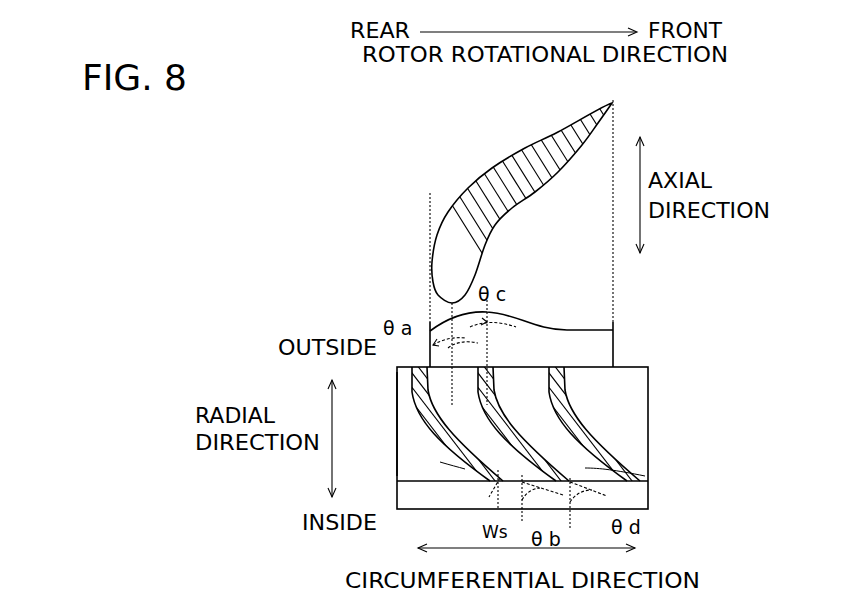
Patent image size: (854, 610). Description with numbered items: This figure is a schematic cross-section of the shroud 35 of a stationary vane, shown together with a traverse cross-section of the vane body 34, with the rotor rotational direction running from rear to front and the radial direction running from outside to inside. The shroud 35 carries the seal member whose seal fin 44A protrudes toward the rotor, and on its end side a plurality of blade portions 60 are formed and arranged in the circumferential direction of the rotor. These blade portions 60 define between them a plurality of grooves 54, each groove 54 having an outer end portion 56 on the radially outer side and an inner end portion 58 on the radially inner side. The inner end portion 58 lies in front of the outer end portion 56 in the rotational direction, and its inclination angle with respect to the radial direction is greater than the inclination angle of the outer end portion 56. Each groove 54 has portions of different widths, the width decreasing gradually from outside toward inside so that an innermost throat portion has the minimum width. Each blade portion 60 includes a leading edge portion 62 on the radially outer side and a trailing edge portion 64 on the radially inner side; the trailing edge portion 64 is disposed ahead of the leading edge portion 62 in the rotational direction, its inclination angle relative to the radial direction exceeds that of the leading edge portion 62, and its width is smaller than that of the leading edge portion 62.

The vane body 34 is at (493, 168).
The shroud 35 is at (648, 367).
The seal fin 44A is at (648, 497).
The groove 54 is at (480, 426).
The outer end portion 56 is at (528, 380).
The inner end portion 58 is at (645, 476).
The blade portion 60 is at (395, 411).
The leading edge portion 62 is at (413, 375).
The trailing edge portion 64 is at (440, 462).